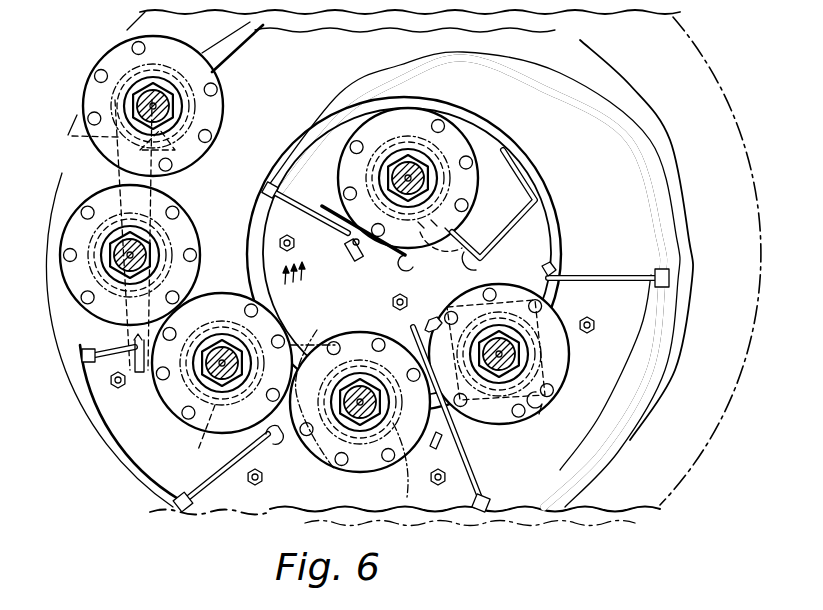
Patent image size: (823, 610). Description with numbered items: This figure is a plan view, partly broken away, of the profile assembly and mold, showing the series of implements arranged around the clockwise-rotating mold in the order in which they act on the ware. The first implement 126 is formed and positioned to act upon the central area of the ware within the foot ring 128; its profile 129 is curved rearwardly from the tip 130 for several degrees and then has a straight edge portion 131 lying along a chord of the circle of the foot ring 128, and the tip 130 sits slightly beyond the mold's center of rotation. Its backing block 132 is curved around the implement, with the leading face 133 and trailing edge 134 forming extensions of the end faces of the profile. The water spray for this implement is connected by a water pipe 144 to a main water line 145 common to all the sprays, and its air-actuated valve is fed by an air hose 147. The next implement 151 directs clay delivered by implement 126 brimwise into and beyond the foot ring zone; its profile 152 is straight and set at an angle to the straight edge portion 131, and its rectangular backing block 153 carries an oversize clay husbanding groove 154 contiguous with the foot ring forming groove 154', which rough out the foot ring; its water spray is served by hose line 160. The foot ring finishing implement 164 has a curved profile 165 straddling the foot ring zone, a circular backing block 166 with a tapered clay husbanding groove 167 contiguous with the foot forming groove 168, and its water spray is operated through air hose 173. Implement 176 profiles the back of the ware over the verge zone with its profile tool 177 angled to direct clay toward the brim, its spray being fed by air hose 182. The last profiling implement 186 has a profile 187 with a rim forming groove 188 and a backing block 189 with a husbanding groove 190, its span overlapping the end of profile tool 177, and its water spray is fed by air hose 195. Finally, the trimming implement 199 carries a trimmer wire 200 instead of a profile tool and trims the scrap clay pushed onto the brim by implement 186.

The implement 126 is at (370, 178).
The foot ring 128 is at (427, 254).
The profile 129 is at (430, 251).
The tip 130 is at (377, 264).
The straight edge portion 131 is at (492, 267).
The backing block 132 is at (501, 204).
The leading face 133 is at (358, 248).
The trailing edge 134 is at (442, 252).
The water pipe 144 is at (280, 240).
The main water line 145 is at (372, 277).
The air hose 147 is at (332, 287).
The implement 151 is at (560, 411).
The profile 152 is at (421, 309).
The backing block 153 is at (531, 354).
The clay husbanding groove 154 is at (578, 315).
The foot ring forming groove 154' is at (483, 458).
The hose line 160 is at (605, 268).
The implement 164 is at (360, 419).
The profile 165 is at (295, 452).
The backing block 166 is at (312, 418).
The clay husbanding groove 167 is at (402, 464).
The foot forming groove 168 is at (312, 332).
The air hose 173 is at (472, 419).
The implement 176 is at (186, 437).
The profile tool 177 is at (222, 346).
The air hose 182 is at (225, 473).
The implement 186 is at (198, 235).
The profile 187 is at (173, 235).
The rim forming groove 188 is at (128, 245).
The backing block 189 is at (215, 318).
The husbanding groove 190 is at (71, 339).
The air hose 195 is at (139, 378).
The trimming implement 199 is at (146, 99).
The trimmer wire 200 is at (67, 133).